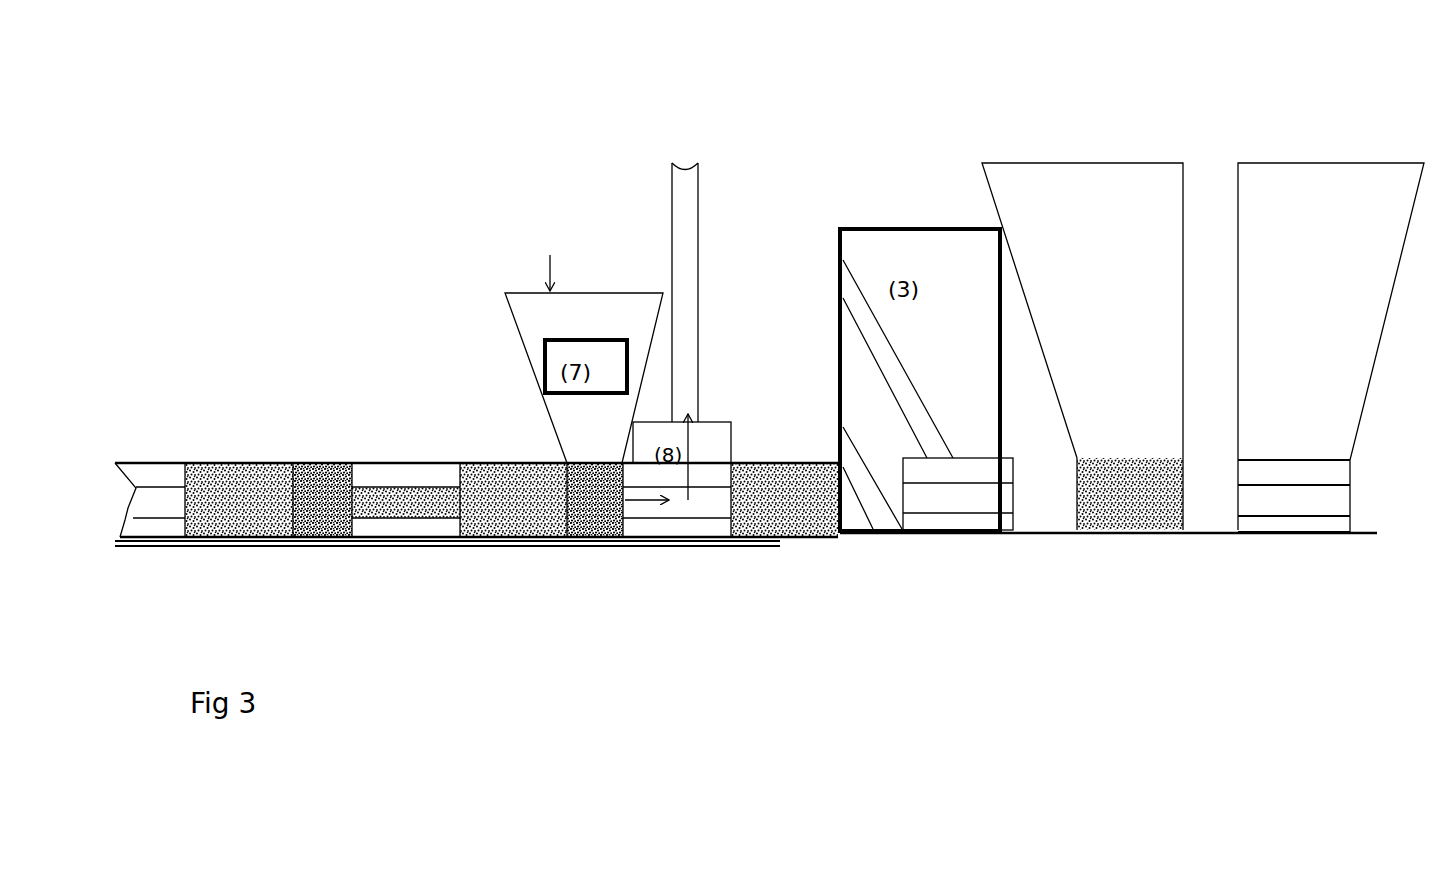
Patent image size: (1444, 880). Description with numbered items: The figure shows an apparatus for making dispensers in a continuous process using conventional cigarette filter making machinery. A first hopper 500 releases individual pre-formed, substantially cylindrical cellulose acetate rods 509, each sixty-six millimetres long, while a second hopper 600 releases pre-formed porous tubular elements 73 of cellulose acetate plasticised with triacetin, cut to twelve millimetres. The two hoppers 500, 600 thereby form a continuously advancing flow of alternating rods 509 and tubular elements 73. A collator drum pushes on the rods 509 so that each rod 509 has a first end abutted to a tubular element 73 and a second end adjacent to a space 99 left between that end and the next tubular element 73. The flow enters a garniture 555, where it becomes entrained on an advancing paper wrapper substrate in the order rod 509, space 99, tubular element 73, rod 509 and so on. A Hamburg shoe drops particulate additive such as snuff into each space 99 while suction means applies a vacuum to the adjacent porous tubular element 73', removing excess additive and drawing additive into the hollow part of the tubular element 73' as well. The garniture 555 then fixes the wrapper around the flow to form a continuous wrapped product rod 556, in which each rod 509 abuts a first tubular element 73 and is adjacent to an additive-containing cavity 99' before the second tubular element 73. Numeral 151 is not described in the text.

The continuous wrapped product rod 556 is at (280, 455).
The garniture 555 is at (688, 542).
The rod 509 is at (240, 520).
The additive containing cavity 99' is at (322, 553).
The intermediate material section 151 is at (596, 545).
The tubular element 73 is at (851, 546).
The tubular element adjacent to the space 73' is at (729, 414).
The space 99 is at (755, 569).
The first hopper 500 is at (1078, 208).
The second hopper 600 is at (1307, 198).